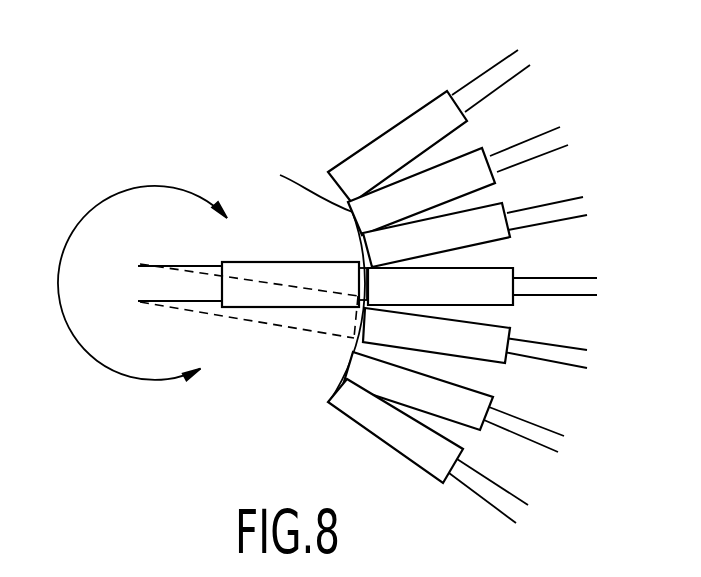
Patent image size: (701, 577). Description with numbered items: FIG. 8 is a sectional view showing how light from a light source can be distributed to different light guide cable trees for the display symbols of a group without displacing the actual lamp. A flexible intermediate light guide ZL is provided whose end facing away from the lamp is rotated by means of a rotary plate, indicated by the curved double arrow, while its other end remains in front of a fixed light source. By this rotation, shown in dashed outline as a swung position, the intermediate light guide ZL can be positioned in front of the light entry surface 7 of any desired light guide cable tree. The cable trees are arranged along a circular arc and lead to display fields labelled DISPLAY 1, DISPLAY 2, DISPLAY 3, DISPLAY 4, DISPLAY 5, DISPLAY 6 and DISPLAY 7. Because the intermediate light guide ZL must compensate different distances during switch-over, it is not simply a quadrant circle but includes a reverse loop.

The display arrangement 2 is at (423, 286).
The flexible intermediate light guide ZL is at (285, 320).
The display 1 is at (482, 286).
The display 3 is at (458, 181).
The display 4 is at (429, 126).
The display 5 is at (475, 338).
The display 6 is at (453, 402).
The light entry surface 7 is at (428, 451).